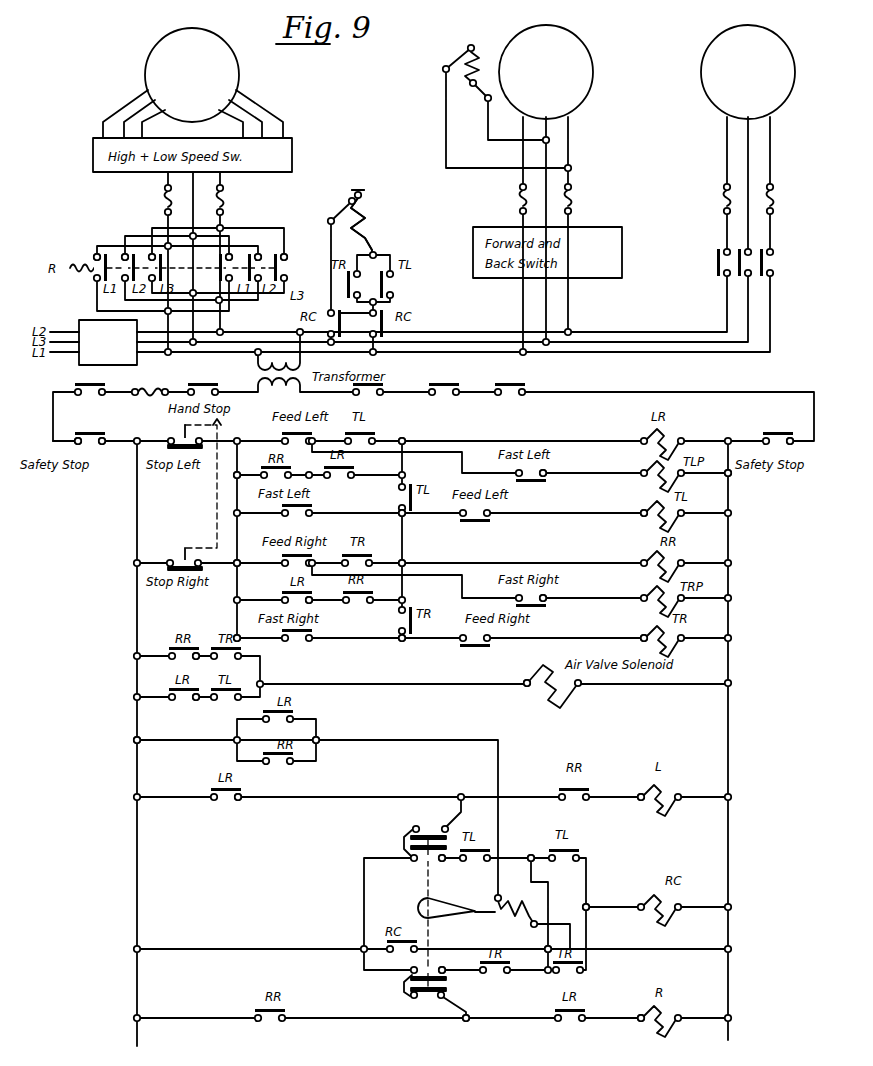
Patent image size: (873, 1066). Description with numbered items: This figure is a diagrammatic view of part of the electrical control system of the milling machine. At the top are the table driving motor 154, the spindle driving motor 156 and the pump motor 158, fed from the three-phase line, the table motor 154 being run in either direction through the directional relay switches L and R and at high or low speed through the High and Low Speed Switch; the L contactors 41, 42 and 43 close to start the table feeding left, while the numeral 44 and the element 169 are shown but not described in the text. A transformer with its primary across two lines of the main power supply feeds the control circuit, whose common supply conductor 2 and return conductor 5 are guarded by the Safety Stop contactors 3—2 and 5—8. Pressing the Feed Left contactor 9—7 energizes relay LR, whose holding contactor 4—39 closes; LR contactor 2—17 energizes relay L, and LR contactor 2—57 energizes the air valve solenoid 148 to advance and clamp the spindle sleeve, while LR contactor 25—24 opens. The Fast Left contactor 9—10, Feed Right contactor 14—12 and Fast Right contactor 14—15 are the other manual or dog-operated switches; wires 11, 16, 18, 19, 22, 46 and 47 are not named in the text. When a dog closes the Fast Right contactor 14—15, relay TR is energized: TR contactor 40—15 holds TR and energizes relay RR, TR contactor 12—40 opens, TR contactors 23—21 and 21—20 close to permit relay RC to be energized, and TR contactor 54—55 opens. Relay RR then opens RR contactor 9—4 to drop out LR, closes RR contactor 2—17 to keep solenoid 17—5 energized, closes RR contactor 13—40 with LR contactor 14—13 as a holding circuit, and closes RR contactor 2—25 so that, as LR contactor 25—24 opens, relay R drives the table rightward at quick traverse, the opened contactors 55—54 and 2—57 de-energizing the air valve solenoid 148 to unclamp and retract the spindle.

The table driving motor 154 is at (192, 75).
The spindle driving motor 156 is at (546, 72).
The pump motor 158 is at (748, 72).
The thermal overload switch 169 is at (376, 220).
The L contactor L2— 41 is at (89, 246).
The L contactor L1— 42 is at (181, 241).
The L contactor L3— 43 is at (221, 235).
The high-low speed switch contact 44 is at (265, 246).
The control circuit conductor 2 is at (247, 736).
The Safety Stop contactor 3—2 terminal 3 is at (70, 448).
The LR holding contactor 4—39 terminal 4 is at (313, 469).
The control circuit return conductor 5 is at (725, 718).
The Feed Left contactor 9—7 terminal 7 is at (410, 457).
The Safety Stop contactor 5—8 terminal 8 is at (796, 448).
The Feed Left and Fast Left contactor conductor 9 is at (244, 487).
The Fast Left contactor 9—10 terminal 10 is at (404, 519).
The conductor 11 is at (637, 519).
The Feed Right contactor 14—12 terminal 12 is at (322, 556).
The RR holding contactor 13—40 terminal 13 is at (320, 594).
The Feed Right and Fast Right contactor conductor 14 is at (257, 607).
The Fast Right contactor 14—15 terminal 15 is at (386, 638).
The conductor 16 is at (635, 631).
The contactor 2—17 terminal 17 is at (309, 738).
The conductor 18 is at (394, 800).
The conductor 19 is at (621, 788).
The TR contactor 21—20 terminal 20 is at (604, 899).
The TR contactor conductor 21 is at (493, 914).
The conductor 22 is at (452, 865).
The TR contactor 23—21 terminal 23 is at (452, 977).
The LR contactor 25—24 terminal 24 is at (620, 1009).
The RR contactor 2—25 terminal 25 is at (457, 1009).
The LR holding contactor 4—39 terminal 39 is at (502, 449).
The TR and RR holding conductor 40 is at (508, 571).
The conductor 46 is at (590, 480).
The conductor 47 is at (589, 605).
The TR contactor 54—55 terminal 54 is at (203, 664).
The TR contactor 54—55 terminal 55 is at (518, 690).
The LR contactor 2—57 terminal 57 is at (203, 705).
The air valve solenoid 148 is at (549, 683).